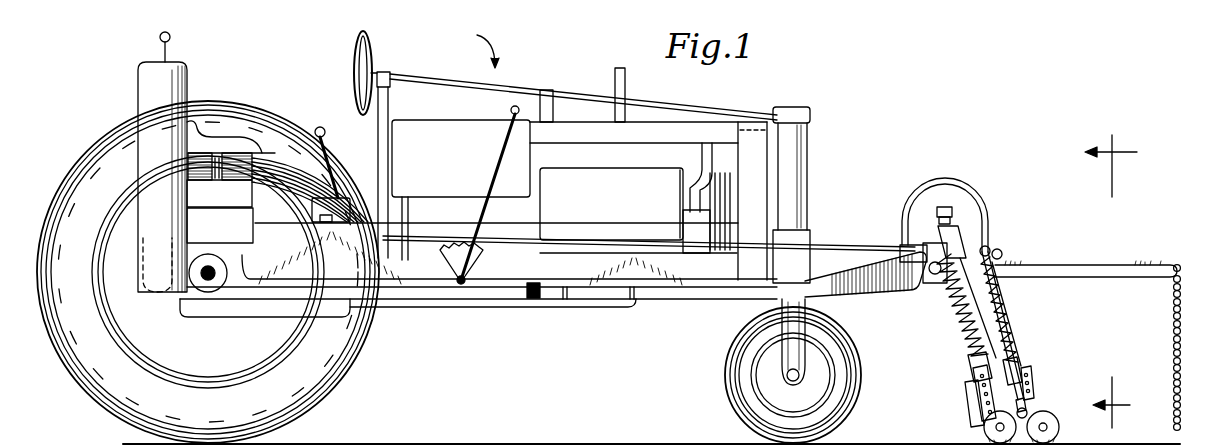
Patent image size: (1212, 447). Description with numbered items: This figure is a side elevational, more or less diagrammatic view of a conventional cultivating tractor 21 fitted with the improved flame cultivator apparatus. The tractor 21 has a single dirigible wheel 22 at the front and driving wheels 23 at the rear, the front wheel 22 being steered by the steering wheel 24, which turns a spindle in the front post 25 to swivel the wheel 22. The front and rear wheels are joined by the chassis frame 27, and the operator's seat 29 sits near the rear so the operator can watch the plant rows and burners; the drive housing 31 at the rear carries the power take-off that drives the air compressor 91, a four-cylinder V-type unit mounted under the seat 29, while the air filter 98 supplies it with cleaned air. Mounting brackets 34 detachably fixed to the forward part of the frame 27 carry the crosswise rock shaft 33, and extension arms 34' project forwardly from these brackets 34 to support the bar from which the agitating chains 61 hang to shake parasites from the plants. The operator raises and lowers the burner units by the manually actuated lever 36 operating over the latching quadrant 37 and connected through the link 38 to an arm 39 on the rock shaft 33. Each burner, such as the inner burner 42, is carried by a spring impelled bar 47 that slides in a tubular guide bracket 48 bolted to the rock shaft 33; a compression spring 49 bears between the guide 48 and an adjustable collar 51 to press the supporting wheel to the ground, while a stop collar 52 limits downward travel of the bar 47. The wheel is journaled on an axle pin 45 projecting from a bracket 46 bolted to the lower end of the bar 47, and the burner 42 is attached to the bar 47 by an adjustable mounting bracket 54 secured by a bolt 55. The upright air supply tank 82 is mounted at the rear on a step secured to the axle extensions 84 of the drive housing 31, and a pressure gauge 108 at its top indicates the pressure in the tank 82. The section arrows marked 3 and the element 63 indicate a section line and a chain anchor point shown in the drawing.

The tractor 21 is at (476, 45).
The dirigible wheel 22 is at (733, 377).
The driving wheels 23 is at (349, 366).
The steering wheel 24 is at (357, 46).
The front post 25 is at (806, 152).
The chassis frame 27 is at (682, 263).
The operator's seat 29 is at (213, 135).
The drive housing 31 is at (262, 270).
The rock shaft 33 is at (930, 282).
The mounting brackets 34 is at (865, 288).
The extension arms 34' is at (1086, 252).
The manually actuated lever 36 is at (497, 157).
The latching quadrant 37 is at (458, 237).
The link 38 is at (570, 238).
The arm 39 is at (906, 232).
The burner 42 is at (1030, 400).
The axle pin 45 is at (1053, 421).
The bracket 46 is at (980, 423).
The spring impelled bar 47 is at (967, 337).
The tubular guide bracket 48 is at (960, 235).
The compression spring 49 is at (970, 350).
The adjustable collar 51 is at (977, 367).
The stop collar 52 is at (945, 207).
The adjustable mounting bracket 54 is at (970, 410).
The bolt 55 is at (977, 388).
The chains 61 is at (1172, 333).
The chain anchor 63 is at (1173, 265).
The air supply tank 82 is at (138, 91).
The axle extensions 84 is at (210, 292).
The air compressor 91 is at (186, 168).
The air filter 98 is at (158, 278).
The pressure gauge 108 is at (171, 37).
The section line 3- 3 is at (1111, 279).